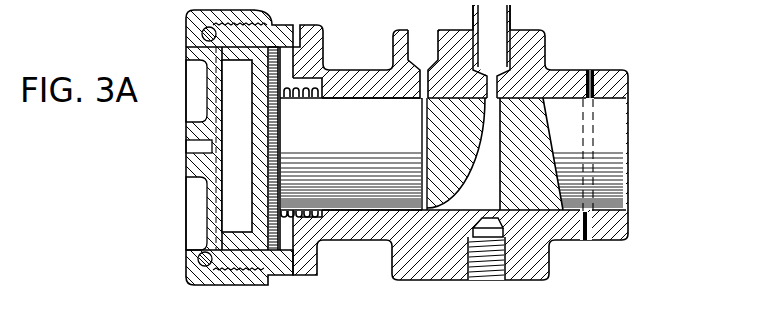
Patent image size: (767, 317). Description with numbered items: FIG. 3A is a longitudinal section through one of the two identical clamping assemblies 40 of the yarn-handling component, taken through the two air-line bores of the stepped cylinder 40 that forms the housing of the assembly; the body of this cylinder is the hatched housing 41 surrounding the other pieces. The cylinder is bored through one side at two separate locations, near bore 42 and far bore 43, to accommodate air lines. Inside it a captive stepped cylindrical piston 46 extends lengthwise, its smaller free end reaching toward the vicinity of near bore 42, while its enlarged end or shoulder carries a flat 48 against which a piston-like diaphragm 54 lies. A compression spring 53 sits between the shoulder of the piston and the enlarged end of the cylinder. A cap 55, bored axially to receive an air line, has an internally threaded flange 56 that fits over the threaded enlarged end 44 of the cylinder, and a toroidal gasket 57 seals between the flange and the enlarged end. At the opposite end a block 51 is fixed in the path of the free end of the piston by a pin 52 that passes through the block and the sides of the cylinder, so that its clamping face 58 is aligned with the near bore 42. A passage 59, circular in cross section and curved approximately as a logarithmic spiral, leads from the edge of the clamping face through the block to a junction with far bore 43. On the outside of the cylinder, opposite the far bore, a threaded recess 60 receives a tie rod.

The clamping assembly 40 is at (428, 158).
The valve body 41 is at (330, 42).
The near bore 42 is at (423, 34).
The far bore 43 is at (500, 38).
The threaded enlarged end 44 is at (240, 59).
The captive stepped cylindrical piston 46 is at (362, 152).
The flat 48 is at (270, 150).
The block 51 is at (624, 186).
The pin 52 is at (594, 86).
The compression spring 53 is at (292, 99).
The piston-like diaphragm 54 is at (259, 134).
The cap 55 is at (193, 23).
The internally threaded flange 56 is at (265, 13).
The toroidal gasket 57 is at (186, 44).
The clamping face 58 is at (421, 128).
The passage 59 is at (496, 202).
The threaded recess 60 is at (488, 283).